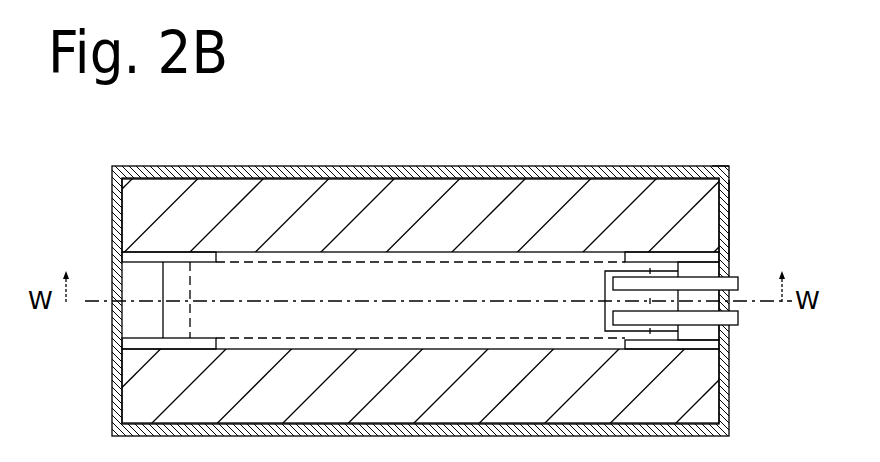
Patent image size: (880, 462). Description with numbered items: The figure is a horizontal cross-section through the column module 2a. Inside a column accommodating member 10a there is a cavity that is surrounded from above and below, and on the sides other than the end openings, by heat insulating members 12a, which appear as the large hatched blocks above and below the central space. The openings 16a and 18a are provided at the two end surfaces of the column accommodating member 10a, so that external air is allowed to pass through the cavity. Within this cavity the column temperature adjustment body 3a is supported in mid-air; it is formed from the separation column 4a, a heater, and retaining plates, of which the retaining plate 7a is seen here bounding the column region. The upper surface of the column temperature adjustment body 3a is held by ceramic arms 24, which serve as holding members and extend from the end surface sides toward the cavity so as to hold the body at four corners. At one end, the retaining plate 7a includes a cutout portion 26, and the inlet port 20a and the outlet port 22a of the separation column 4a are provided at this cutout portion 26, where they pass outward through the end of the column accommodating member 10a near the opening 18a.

The column module 2a is at (710, 157).
The column temperature adjustment body 3a is at (527, 250).
The separation column 4a is at (373, 265).
The retaining plate 7a is at (420, 257).
The column accommodating member 10a is at (597, 166).
The heat insulating members 12a is at (488, 198).
The opening 16a is at (117, 318).
The opening 18a is at (727, 268).
The inlet port 20a is at (723, 285).
The outlet port 22a is at (726, 318).
The ceramic arms 24 is at (728, 212).
The cutout portion 26 is at (610, 270).